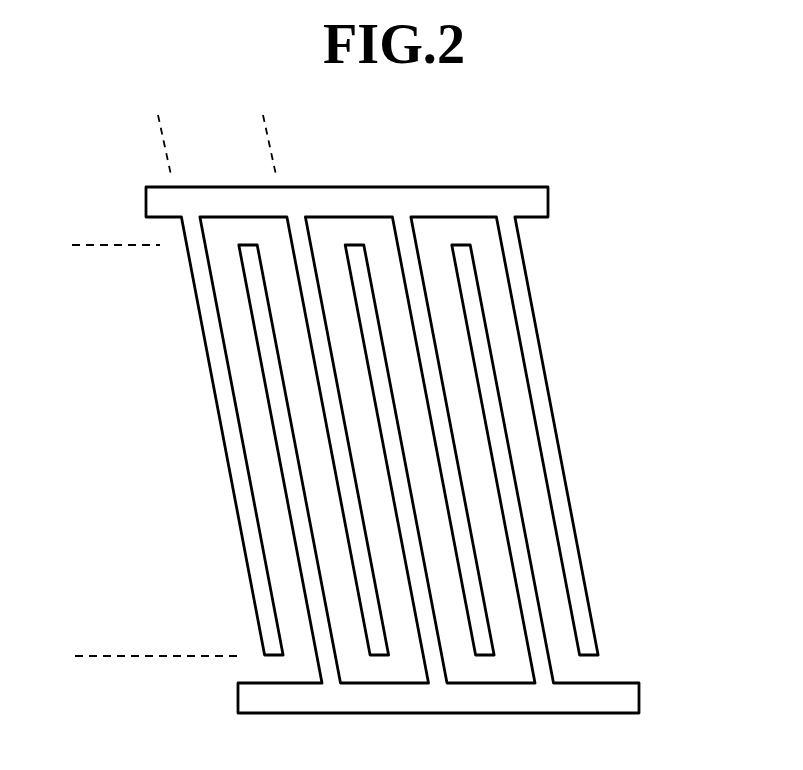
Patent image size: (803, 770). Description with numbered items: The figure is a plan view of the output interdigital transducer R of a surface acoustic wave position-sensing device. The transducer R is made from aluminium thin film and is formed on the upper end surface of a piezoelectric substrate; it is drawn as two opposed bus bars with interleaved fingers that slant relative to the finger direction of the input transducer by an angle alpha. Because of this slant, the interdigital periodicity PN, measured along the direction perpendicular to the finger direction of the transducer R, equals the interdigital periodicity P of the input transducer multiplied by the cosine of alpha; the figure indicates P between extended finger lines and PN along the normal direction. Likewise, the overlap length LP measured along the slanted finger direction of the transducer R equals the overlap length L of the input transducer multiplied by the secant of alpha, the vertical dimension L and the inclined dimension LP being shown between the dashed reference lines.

The output interdigital transducer R is at (535, 203).
The interdigital periodicity P is at (273, 157).
The interdigital periodicity along the vertical direction to the finger direction of PN is at (167, 158).
The overlap length L is at (90, 245).
The overlap length along the finger direction of interdigital transducer R LP is at (90, 245).